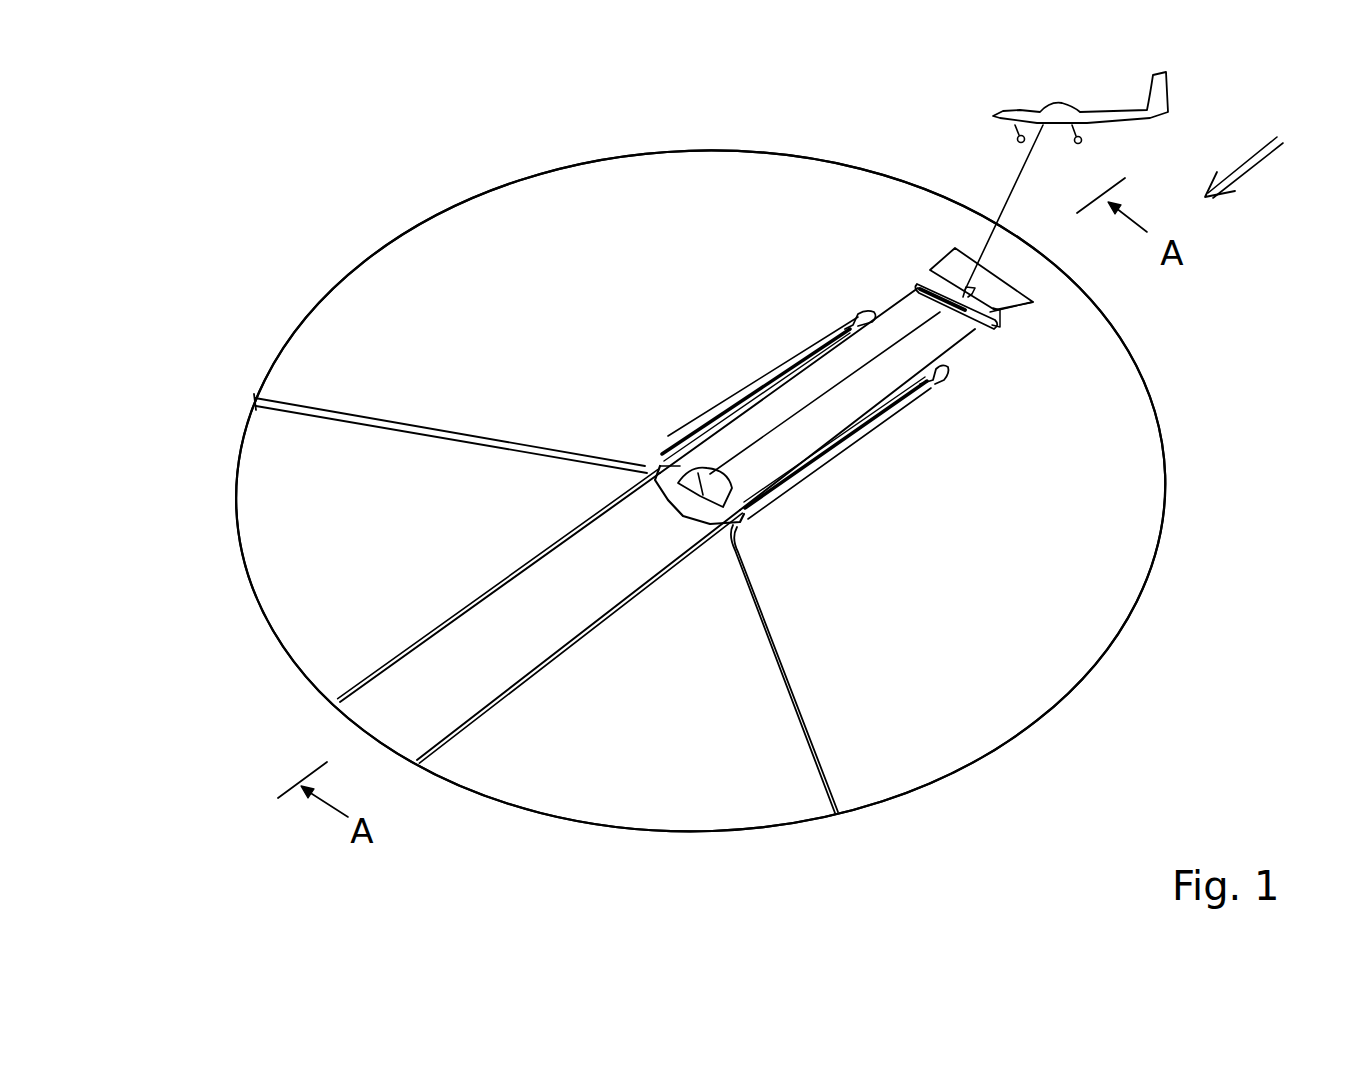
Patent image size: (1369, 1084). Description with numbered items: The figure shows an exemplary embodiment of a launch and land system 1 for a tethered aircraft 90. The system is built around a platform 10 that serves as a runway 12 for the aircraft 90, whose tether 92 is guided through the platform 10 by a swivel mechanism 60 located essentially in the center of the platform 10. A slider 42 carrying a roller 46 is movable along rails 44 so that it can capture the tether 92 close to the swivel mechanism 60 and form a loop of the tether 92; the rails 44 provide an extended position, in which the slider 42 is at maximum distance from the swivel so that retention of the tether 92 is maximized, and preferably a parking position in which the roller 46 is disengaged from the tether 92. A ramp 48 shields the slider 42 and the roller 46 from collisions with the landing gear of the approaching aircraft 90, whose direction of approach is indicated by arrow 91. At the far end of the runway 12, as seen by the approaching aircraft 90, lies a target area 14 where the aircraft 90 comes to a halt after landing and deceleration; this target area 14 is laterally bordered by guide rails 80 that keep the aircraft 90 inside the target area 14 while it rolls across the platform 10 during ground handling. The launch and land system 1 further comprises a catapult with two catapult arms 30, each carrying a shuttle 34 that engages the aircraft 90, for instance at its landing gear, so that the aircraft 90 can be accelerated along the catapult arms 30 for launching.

The launch and land system 1 is at (207, 265).
The platform 10 is at (537, 263).
The runway 12 is at (932, 342).
The target area 14 is at (418, 545).
The catapult arms 30 is at (417, 643).
The shuttle 34 is at (845, 324).
The slider 42 is at (980, 326).
The rails 44 is at (745, 411).
The roller 46 is at (918, 284).
The ramp 48 is at (953, 266).
The swivel mechanism 60 is at (700, 477).
The guide rails 80 is at (420, 435).
The tethered aircraft 90 is at (1023, 112).
The arrow 91 is at (1272, 144).
The tether 92 is at (848, 394).